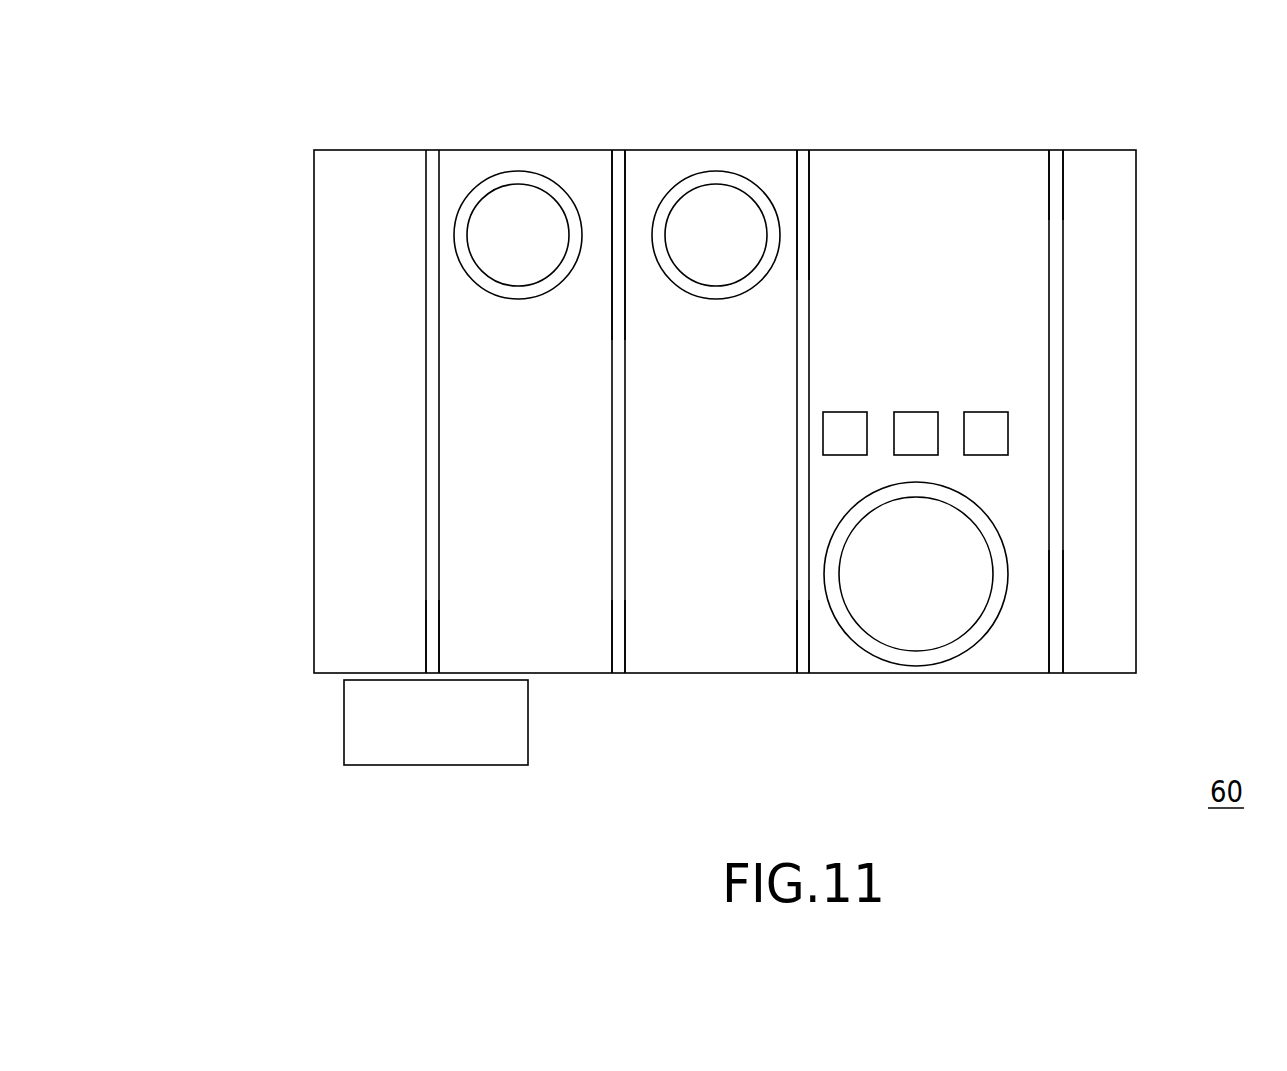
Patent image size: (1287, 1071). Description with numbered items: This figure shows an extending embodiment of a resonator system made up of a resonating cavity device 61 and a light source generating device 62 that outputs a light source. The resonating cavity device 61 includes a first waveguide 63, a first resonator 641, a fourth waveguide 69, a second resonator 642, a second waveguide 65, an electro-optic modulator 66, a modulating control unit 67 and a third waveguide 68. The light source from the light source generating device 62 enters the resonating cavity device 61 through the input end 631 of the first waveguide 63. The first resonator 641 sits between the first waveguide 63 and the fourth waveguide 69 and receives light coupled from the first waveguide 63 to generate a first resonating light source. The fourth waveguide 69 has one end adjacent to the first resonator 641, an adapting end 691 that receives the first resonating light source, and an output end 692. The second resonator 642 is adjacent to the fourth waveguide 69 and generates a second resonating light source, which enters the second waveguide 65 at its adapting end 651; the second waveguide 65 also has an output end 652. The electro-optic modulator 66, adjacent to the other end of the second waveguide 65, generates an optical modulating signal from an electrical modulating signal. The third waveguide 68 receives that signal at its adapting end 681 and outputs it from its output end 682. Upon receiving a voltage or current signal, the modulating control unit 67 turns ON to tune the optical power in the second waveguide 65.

The resonating cavity device 61 is at (314, 323).
The light source generating device 62 is at (349, 729).
The first waveguide 63 is at (433, 447).
The input end 631 is at (437, 650).
The first resonator 641 is at (497, 185).
The second resonator 642 is at (695, 185).
The second waveguide 65 is at (813, 352).
The adapting end 651 is at (811, 267).
The output end 652 is at (805, 657).
The electro-optic modulator 66 is at (973, 637).
The modulating control unit 67 is at (993, 439).
The third waveguide 68 is at (1065, 367).
The adapting end 681 is at (1052, 579).
The output end 682 is at (1057, 190).
The fourth waveguide 69 is at (625, 492).
The adapting end 691 is at (625, 325).
The output end 692 is at (619, 647).